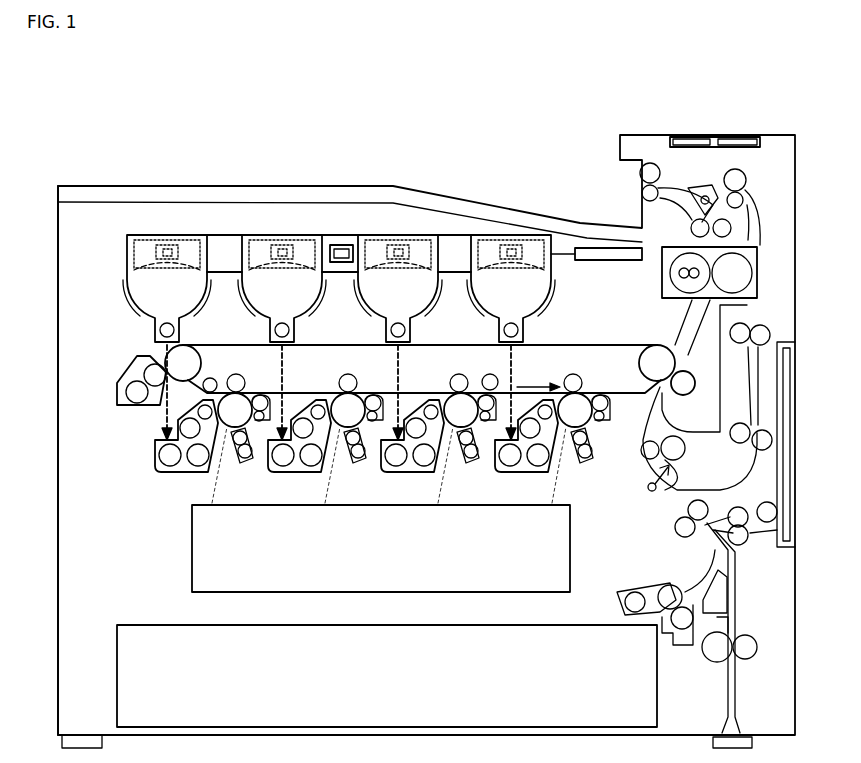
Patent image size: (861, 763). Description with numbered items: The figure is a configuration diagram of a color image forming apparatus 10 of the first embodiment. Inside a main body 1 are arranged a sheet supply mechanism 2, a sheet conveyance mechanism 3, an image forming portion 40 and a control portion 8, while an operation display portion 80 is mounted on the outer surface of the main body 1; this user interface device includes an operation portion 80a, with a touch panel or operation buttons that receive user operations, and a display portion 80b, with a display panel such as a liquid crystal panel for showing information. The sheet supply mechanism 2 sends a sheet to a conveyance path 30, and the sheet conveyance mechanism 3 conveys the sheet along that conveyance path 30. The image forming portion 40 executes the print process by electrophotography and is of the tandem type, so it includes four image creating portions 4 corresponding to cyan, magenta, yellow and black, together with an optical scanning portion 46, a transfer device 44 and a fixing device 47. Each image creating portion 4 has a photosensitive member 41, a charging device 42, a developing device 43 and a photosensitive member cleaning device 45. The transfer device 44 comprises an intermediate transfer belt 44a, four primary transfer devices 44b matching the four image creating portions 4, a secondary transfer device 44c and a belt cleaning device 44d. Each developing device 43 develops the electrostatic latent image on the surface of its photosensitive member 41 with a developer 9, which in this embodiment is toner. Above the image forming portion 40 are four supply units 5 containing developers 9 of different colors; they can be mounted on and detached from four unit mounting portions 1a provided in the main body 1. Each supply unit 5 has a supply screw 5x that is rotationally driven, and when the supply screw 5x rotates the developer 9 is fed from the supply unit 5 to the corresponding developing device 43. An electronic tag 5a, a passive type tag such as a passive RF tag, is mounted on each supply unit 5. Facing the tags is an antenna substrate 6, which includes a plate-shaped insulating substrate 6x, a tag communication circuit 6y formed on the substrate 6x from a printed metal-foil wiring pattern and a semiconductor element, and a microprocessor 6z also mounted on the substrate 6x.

The main body 1 is at (58, 413).
The unit mounting portion 1a is at (555, 300).
The sheet supply mechanism 2 is at (673, 655).
The sheet conveyance mechanism 3 is at (757, 620).
The image creating portion 4 is at (226, 396).
The supply unit 5 is at (190, 233).
The electronic tag 5a is at (162, 247).
The supply screw 5x is at (158, 332).
The antenna substrate 6 is at (228, 237).
The substrate 6x is at (342, 264).
The tag communication circuit 6y is at (169, 248).
The microprocessor 6z is at (342, 245).
The control portion 8 is at (597, 247).
The developer 9 is at (552, 268).
The image forming apparatus 10 is at (112, 140).
The conveyance path 30 is at (672, 503).
The image forming portion 40 is at (103, 378).
The photosensitive member 41 is at (250, 460).
The charging device 42 is at (239, 463).
The developing device 43 is at (181, 475).
The transfer device 44 is at (694, 357).
The intermediate transfer belt 44a is at (597, 344).
The primary transfer device 44b is at (242, 378).
The secondary transfer device 44c is at (698, 384).
The belt cleaning device 44d is at (130, 405).
The photosensitive member cleaning device 45 is at (260, 403).
The optical scanning portion 46 is at (572, 560).
The fixing device 47 is at (758, 263).
The operation display portion 80 is at (762, 141).
The operation portion 80a is at (695, 134).
The display portion 80b is at (745, 134).